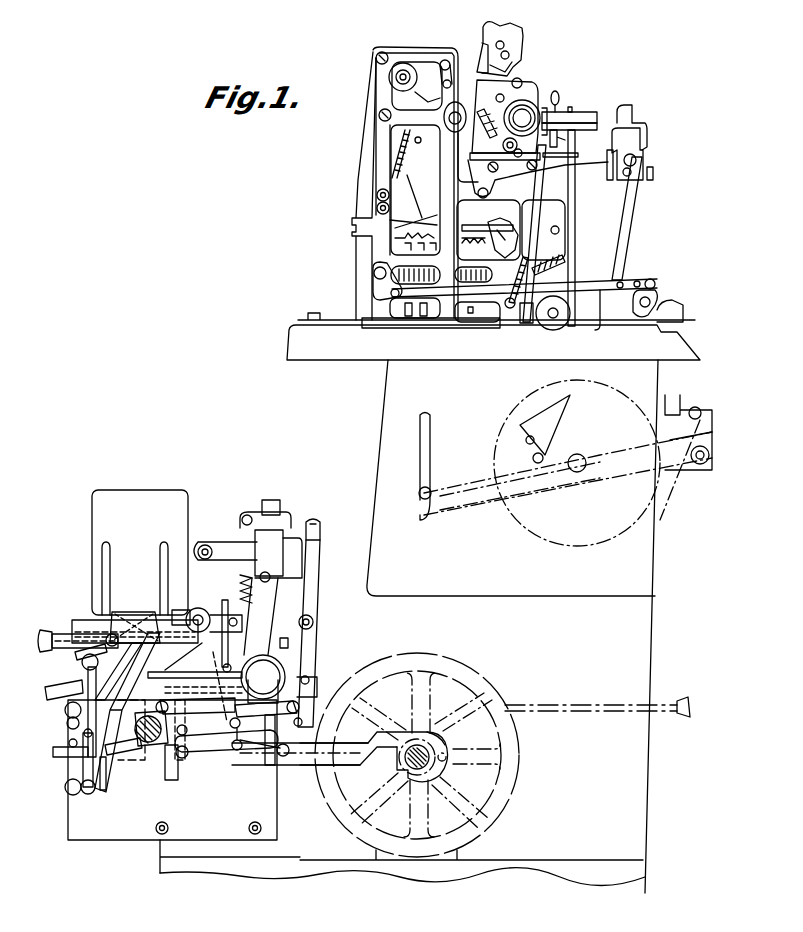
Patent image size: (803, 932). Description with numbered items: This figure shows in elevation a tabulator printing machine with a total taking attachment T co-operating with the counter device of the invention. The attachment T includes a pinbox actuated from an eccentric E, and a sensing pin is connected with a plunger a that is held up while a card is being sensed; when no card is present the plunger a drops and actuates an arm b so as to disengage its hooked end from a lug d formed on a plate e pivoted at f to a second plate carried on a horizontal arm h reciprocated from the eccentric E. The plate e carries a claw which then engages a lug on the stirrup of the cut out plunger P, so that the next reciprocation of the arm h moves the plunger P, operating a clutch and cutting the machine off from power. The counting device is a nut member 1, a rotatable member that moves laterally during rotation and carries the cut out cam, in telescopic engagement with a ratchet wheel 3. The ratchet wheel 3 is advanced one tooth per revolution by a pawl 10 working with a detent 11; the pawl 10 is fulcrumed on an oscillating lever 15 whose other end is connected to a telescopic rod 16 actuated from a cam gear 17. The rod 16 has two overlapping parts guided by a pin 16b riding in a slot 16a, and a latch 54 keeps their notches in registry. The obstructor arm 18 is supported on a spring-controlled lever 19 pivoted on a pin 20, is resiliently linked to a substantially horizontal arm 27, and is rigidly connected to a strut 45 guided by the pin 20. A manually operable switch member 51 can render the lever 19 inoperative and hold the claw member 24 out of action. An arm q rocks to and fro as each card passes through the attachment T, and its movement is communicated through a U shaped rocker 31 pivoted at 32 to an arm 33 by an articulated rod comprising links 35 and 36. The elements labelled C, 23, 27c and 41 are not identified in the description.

The total taking attachment T is at (262, 507).
The carriage plate C is at (150, 612).
The cut out plunger P is at (60, 626).
The lug d is at (147, 622).
The plate e is at (130, 642).
The pivot f is at (178, 608).
The plunger a is at (248, 554).
The arm b is at (255, 611).
The arm q is at (308, 636).
The eccentric E is at (265, 670).
The horizontal arm h is at (261, 613).
The claw member 24 is at (98, 638).
The link arm 23 is at (78, 654).
The obstructor arm 18 is at (74, 712).
The switch member 51 is at (80, 714).
The spring-controlled lever 19 is at (71, 732).
The bracket 27c is at (68, 768).
The horizontal arm 27 is at (125, 752).
The pin 20 is at (100, 780).
The strut 45 is at (122, 775).
The nut member 1 is at (131, 753).
The ratchet wheel 3 is at (142, 728).
The pawl 10 is at (195, 634).
The detent 11 is at (216, 652).
The link 41 is at (218, 675).
The link 36 is at (263, 680).
The U shaped rocker 31 is at (304, 692).
The pivot 32 is at (332, 732).
The cam gear 17 is at (428, 745).
The oscillating lever 15 is at (172, 766).
The link 35 is at (216, 752).
The latch 54 is at (260, 752).
The arm 33 is at (200, 765).
The telescopic rod 16 is at (232, 768).
The pin 16b is at (272, 768).
The slot 16a is at (302, 768).